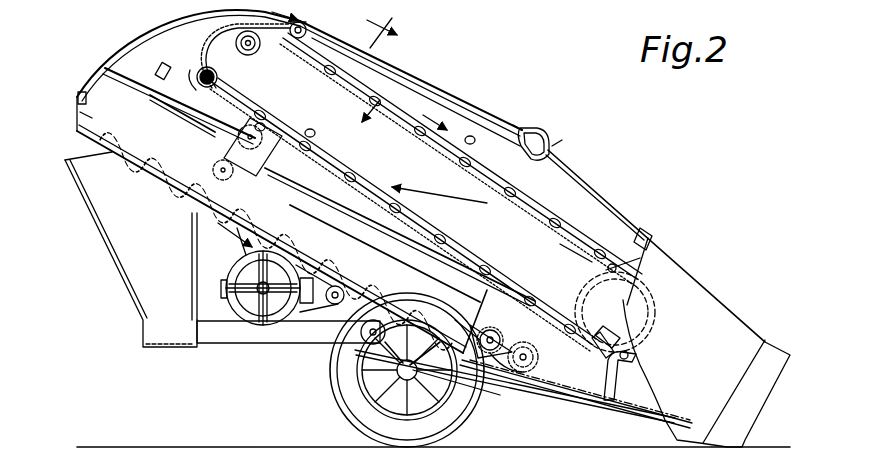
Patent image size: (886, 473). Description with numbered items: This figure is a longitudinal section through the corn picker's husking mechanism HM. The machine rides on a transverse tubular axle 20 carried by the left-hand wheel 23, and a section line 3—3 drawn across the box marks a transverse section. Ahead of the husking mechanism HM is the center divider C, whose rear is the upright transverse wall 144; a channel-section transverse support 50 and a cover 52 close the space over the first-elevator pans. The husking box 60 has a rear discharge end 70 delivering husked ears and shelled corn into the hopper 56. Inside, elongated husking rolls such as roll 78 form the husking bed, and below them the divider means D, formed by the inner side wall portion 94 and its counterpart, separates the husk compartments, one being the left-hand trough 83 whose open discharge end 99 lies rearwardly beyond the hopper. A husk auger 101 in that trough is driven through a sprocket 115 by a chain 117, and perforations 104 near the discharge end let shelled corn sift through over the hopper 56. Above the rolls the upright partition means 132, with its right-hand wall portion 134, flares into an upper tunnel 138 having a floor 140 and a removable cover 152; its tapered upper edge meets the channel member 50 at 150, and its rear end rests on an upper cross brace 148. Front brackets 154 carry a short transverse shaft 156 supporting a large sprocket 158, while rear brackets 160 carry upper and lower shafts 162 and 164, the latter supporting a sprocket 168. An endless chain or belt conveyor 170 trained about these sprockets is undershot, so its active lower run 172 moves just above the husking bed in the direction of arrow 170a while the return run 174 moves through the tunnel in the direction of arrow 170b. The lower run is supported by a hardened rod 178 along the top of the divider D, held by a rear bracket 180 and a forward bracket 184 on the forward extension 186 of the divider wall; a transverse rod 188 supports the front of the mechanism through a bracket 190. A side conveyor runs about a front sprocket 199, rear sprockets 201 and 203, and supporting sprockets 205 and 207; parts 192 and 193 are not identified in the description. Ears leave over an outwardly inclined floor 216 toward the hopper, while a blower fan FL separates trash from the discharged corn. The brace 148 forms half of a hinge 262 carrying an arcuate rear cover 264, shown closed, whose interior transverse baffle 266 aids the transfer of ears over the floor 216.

The tubular axle 20 is at (355, 331).
The left-hand wheel 23 is at (343, 388).
The section line 3 is at (307, 132).
The transverse brace or support 50 is at (558, 154).
The cover 52 is at (605, 196).
The hopper 56 is at (78, 200).
The husking box 60 is at (494, 126).
The rear or discharge end 70 is at (77, 80).
The husking roll 78 is at (478, 278).
The left-hand trough 83 is at (75, 131).
The inner side wall portion 94 is at (552, 392).
The open or discharge end 99 is at (80, 116).
The husk auger 101 is at (79, 97).
The perforations 104 is at (162, 175).
The sprocket 115 is at (470, 360).
The driving chain 117 is at (493, 392).
The partition means 132 is at (385, 103).
The right-hand upright wall portion 134 is at (400, 234).
The upper tunnel or enclosure 138 is at (438, 96).
The floor or transverse wall 140 is at (590, 260).
The transverse wall 144 is at (646, 228).
The transverse upper cross brace 148 is at (318, 38).
The meeting point 150 is at (524, 128).
The removable cover 152 is at (405, 76).
The bracket 154 is at (638, 297).
The short transverse shaft 156 is at (625, 303).
The sprocket 158 is at (650, 338).
The bracket 160 is at (226, 55).
The upper transverse shaft 162 is at (248, 55).
The lower transverse shaft 164 is at (216, 78).
The sprocket 168 is at (190, 70).
The conveyor 170 is at (288, 10).
The arrow 170a is at (439, 189).
The arrow 170b is at (445, 120).
The lower run 172 is at (348, 177).
The upper run 174 is at (316, 62).
The hardened rod 178 is at (153, 61).
The bracket 180 is at (196, 100).
The bracket 184 is at (598, 356).
The forward portion of divider wall extension 186 is at (585, 403).
The transverse supporting rod 188 is at (640, 377).
The bracket 190 is at (632, 362).
The roller 192 is at (343, 120).
The roller 193 is at (310, 103).
The sprocket 199 is at (546, 343).
The sprocket 201 is at (257, 143).
The sprocket 203 is at (232, 171).
The sprocket 205 is at (500, 338).
The sprocket 207 is at (512, 372).
The outwardly inclined floor 216 is at (195, 125).
The hinge means 262 is at (302, 29).
The rear closure member or cover 264 is at (205, 8).
The baffle 266 is at (165, 20).
The center divider C is at (777, 337).
The divider means D is at (162, 72).
The blower fan FL is at (244, 250).
The husking mechanism HM is at (481, 92).